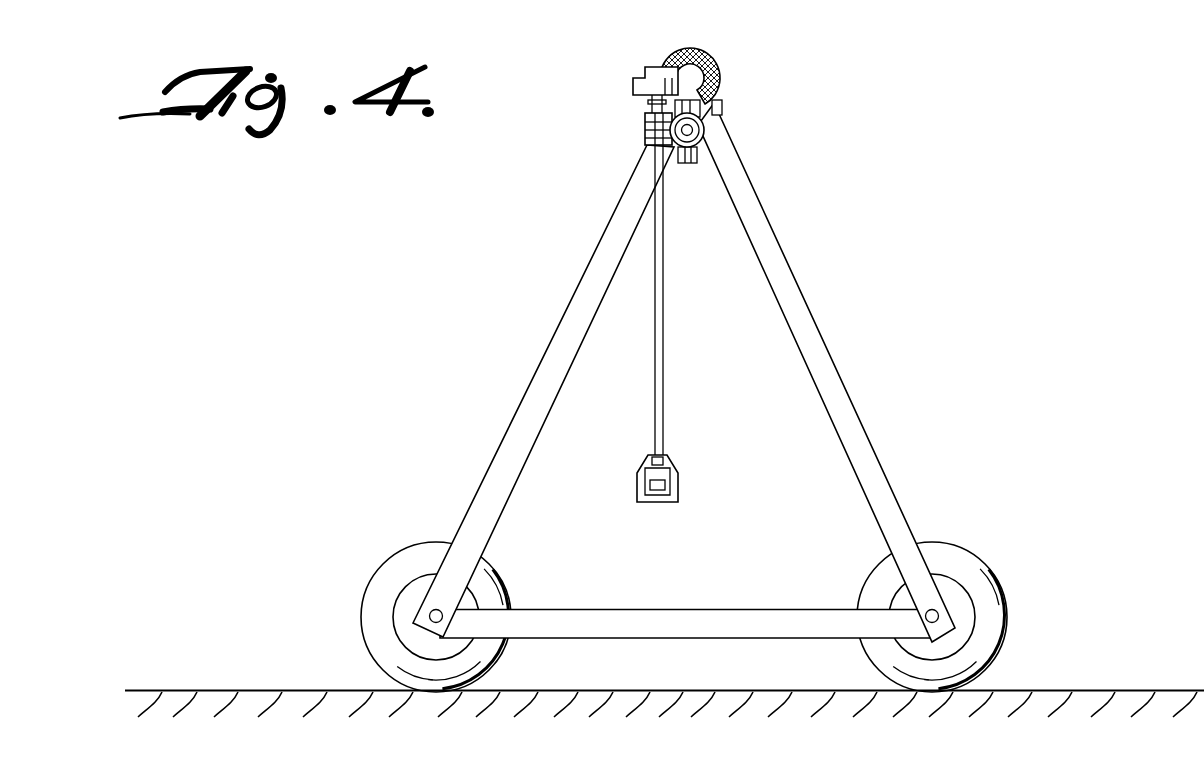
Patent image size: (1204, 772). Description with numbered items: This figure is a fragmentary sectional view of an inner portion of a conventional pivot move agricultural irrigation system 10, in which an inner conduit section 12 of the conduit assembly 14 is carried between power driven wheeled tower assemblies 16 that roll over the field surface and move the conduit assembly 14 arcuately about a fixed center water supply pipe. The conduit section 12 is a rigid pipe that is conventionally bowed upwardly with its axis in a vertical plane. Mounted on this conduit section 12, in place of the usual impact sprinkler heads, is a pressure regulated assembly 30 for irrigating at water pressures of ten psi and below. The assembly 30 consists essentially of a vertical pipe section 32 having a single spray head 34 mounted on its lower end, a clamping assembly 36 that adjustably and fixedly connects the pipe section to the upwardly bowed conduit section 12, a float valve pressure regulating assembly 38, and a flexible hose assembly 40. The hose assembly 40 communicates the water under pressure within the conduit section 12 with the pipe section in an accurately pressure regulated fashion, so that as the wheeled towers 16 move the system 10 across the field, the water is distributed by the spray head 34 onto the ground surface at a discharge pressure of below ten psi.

The pivot move agricultural irrigation system 10 is at (878, 230).
The conduit section 12 is at (697, 142).
The conduit assembly 14 is at (712, 126).
The wheeled tower assembly 16 is at (903, 503).
The pressure regulated assembly 30 is at (650, 168).
The vertical pipe section 32 is at (658, 308).
The spray head 34 is at (678, 482).
The clamping assembly 36 is at (640, 126).
The float valve pressure regulating assembly 38 is at (628, 80).
The flexible hose assembly 40 is at (709, 81).